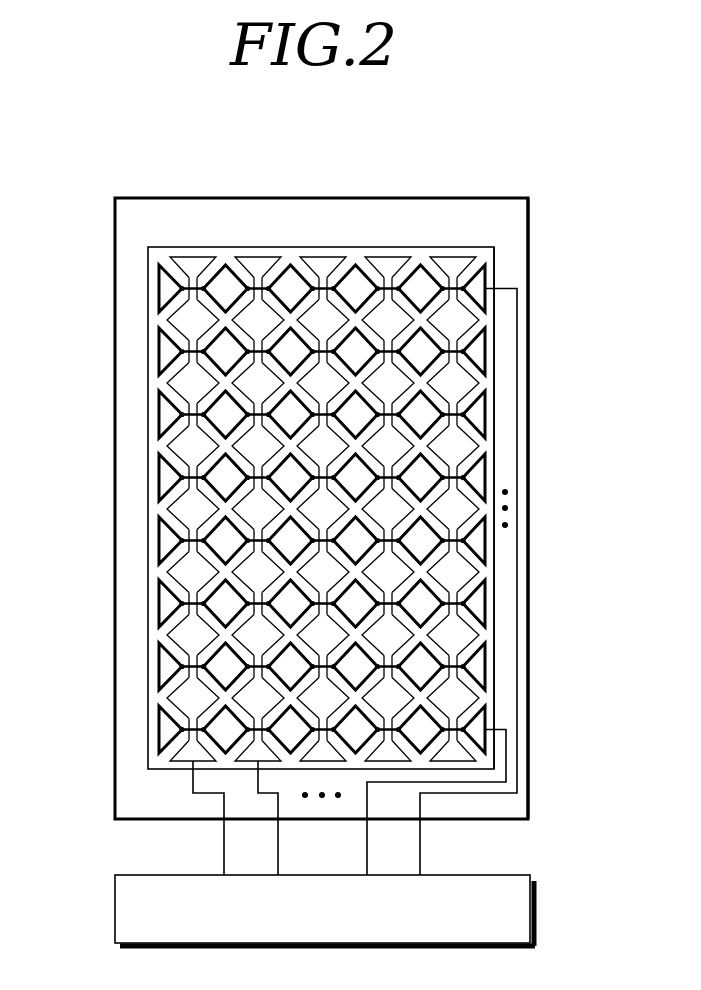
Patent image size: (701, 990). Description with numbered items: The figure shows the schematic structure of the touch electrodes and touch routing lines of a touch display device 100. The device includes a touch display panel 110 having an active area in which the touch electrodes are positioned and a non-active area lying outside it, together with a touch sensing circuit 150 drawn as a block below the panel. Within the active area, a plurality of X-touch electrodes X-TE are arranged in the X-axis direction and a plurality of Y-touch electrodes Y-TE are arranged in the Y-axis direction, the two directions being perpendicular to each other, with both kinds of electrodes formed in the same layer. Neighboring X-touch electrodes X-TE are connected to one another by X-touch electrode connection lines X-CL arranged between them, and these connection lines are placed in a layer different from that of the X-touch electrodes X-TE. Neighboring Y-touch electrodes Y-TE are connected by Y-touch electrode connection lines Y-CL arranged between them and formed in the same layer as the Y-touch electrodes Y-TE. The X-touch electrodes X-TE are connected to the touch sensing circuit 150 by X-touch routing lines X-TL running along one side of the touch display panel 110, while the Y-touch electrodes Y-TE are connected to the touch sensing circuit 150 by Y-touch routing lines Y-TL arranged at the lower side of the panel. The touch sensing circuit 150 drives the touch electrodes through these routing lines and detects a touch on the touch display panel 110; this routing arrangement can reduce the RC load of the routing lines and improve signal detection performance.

The touch display device 100 is at (153, 137).
The touch display panel 110 is at (318, 197).
The touch sensing circuit 150 is at (341, 923).
The X-touch electrode X-TE is at (168, 289).
The X-touch electrode connection line X-CL is at (184, 291).
The Y-touch electrode Y-TE is at (185, 428).
The Y-touch electrode connection line Y-CL is at (185, 478).
The Y-touch routing line Y-TL is at (224, 846).
The X-touch routing line X-TL is at (421, 845).